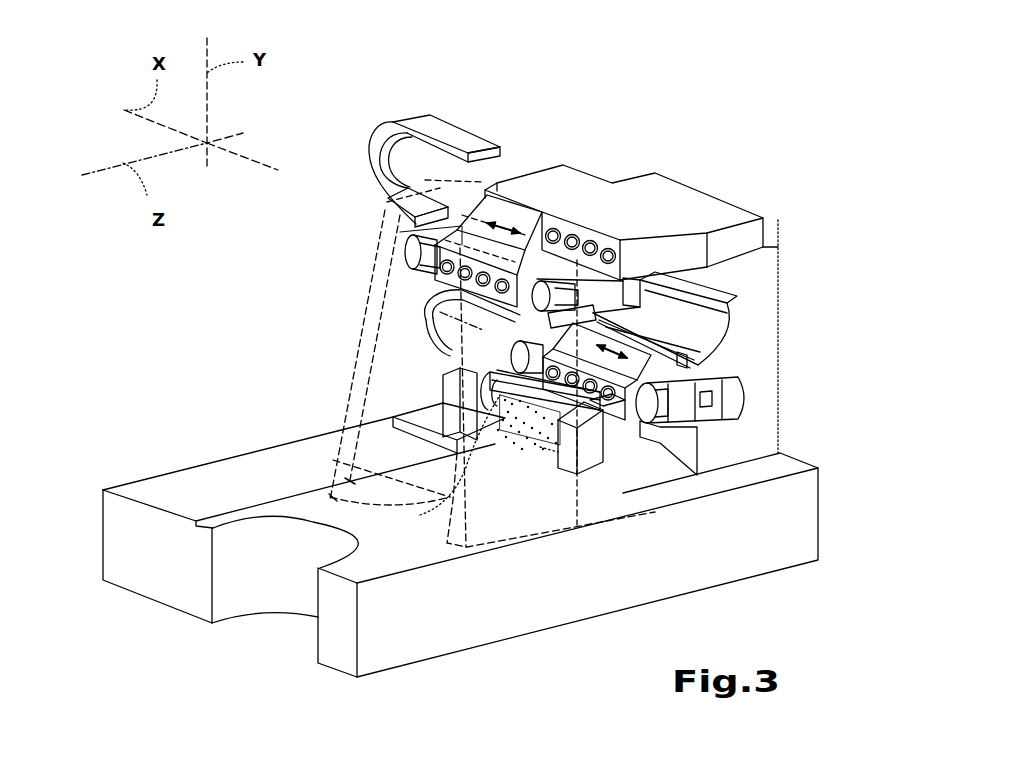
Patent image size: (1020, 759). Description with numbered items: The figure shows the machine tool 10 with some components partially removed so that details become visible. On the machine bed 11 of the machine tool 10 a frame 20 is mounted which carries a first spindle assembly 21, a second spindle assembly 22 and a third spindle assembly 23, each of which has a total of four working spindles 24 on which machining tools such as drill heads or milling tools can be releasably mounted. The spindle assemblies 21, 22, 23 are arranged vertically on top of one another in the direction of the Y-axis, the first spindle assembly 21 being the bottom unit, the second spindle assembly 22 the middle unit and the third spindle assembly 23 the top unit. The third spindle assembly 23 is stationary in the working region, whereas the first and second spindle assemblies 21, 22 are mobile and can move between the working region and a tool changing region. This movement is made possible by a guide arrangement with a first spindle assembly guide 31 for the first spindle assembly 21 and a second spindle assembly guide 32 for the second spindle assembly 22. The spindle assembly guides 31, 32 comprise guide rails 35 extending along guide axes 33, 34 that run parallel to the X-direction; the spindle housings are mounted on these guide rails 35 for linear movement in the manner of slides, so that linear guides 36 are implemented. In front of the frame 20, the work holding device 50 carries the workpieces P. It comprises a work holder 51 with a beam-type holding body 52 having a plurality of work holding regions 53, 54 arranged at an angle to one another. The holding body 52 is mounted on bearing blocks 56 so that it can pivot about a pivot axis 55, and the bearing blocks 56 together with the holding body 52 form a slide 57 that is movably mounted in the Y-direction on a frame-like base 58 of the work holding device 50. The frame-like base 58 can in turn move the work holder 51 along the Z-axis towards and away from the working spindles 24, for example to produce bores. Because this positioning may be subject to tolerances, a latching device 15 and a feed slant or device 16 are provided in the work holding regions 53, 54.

The machine tool 10 is at (767, 110).
The machine bed 11 is at (337, 655).
The latching device 15 is at (458, 453).
The feed slant or device 16 is at (430, 512).
The frame 20 is at (797, 243).
The first spindle assembly 21 is at (687, 363).
The second spindle assembly 22 is at (507, 210).
The third spindle assembly 23 is at (732, 202).
The working spindles 24 is at (548, 232).
The first spindle assembly guide 31 is at (762, 398).
The second spindle assembly guide 32 is at (683, 268).
The guide axis 33 is at (425, 297).
The guide axis 34 is at (385, 213).
The guide rails 35 is at (683, 347).
The linear guides 36 is at (718, 290).
The work holding device 50 is at (368, 312).
The work holder 51 is at (533, 440).
The holding body 52 is at (502, 438).
The work holding region 53 is at (553, 450).
The work holding region 54 is at (630, 428).
The pivot axis 55 is at (633, 428).
The bearing blocks 56 is at (446, 398).
The slide 57 is at (568, 450).
The frame-like base 58 is at (355, 353).